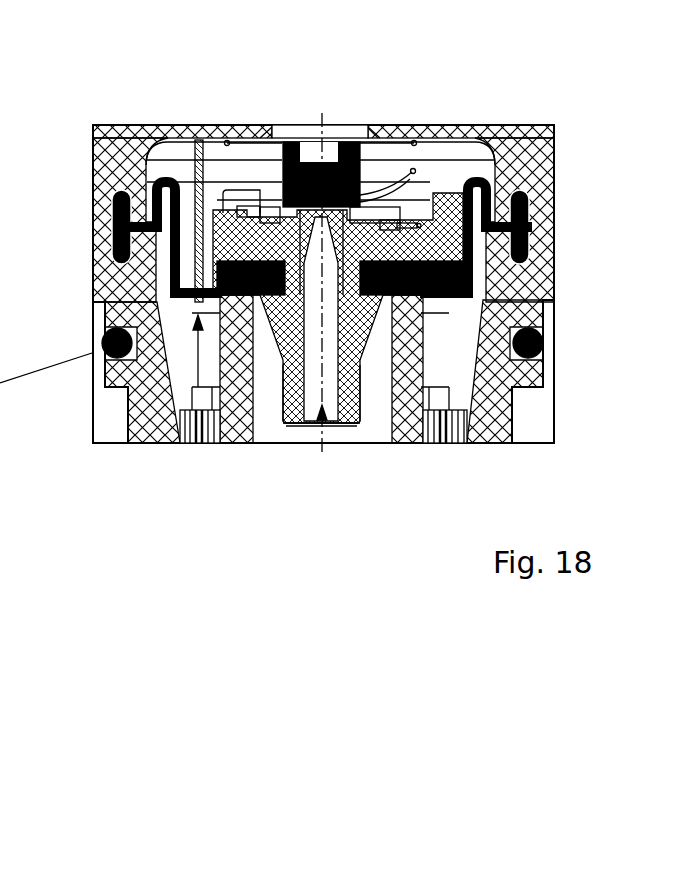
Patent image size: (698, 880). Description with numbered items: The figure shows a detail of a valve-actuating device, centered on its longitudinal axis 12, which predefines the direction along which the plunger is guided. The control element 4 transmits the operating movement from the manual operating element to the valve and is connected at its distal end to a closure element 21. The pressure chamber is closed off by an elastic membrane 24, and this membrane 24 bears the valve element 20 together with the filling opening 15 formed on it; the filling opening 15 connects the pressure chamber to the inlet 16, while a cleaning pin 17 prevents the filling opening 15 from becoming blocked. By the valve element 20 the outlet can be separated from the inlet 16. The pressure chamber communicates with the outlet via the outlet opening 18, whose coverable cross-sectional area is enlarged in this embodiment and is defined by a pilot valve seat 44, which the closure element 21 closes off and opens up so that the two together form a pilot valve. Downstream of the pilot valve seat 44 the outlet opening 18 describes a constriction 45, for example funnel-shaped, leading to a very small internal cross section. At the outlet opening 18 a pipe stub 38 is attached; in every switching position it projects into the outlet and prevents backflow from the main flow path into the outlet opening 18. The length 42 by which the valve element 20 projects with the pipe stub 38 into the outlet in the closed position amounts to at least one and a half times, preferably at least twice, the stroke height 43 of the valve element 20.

The control element 4 is at (340, 130).
The longitudinal axis 12 is at (318, 118).
The filling opening 15 is at (197, 332).
The inlet 16 is at (420, 358).
The cleaning pin 17 is at (198, 174).
The outlet opening 18 is at (322, 422).
The valve element 20 is at (366, 410).
The closure element 21 is at (365, 193).
The elastic membrane 24 is at (120, 245).
The pipe stub 38 is at (342, 426).
The length 42 is at (583, 293).
The stroke height 43 is at (575, 152).
The pilot valve seat 44 is at (283, 365).
The constriction 45 is at (291, 424).